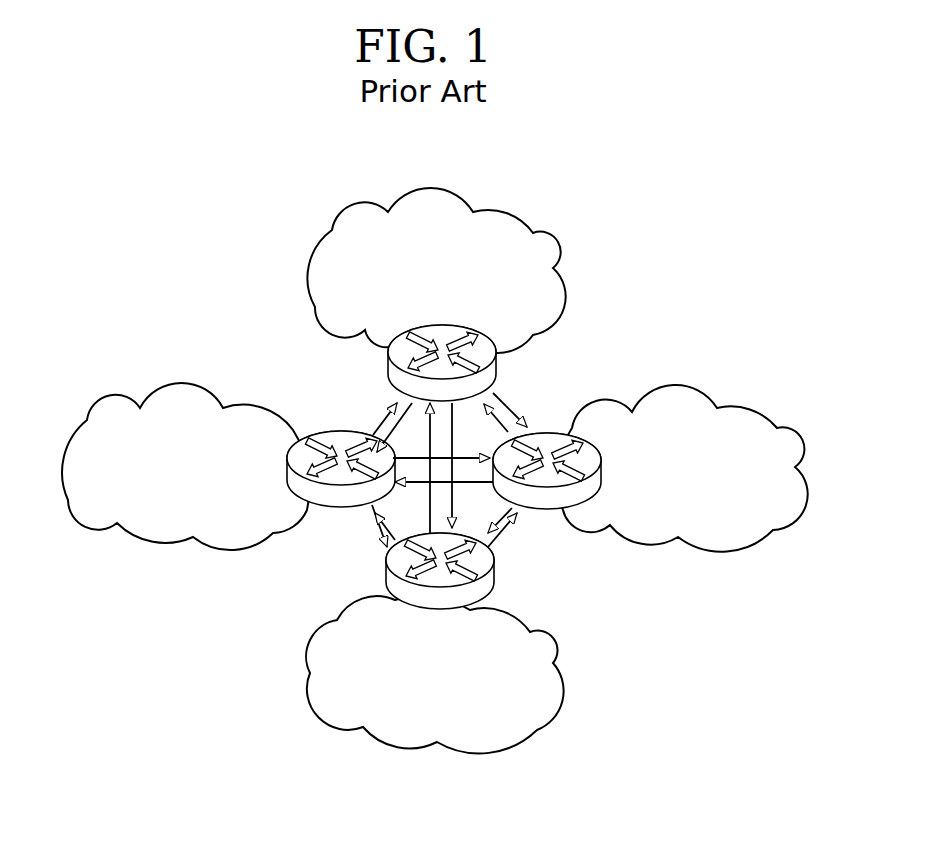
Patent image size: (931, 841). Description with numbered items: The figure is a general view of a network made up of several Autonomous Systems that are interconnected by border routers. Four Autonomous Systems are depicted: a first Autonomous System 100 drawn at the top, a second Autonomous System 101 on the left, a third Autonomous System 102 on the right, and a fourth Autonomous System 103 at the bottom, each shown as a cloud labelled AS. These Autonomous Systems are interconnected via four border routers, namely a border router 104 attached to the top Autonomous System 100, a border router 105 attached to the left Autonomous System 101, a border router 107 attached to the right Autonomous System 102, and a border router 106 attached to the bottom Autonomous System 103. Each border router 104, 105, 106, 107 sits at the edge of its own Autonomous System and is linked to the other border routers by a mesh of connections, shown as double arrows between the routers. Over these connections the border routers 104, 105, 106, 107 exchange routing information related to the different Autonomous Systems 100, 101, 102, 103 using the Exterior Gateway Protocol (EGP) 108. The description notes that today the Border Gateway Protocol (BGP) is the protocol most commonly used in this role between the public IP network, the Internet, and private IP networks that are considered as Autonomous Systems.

The Autonomous System 100 is at (433, 188).
The Autonomous System 101 is at (208, 550).
The Autonomous System 102 is at (745, 552).
The Autonomous System 103 is at (495, 753).
The border router 104 is at (497, 364).
The border router 105 is at (338, 508).
The border router 106 is at (390, 569).
The border router 107 is at (521, 428).
The Exterior Gateway Protocol (EGP) 108 is at (557, 670).